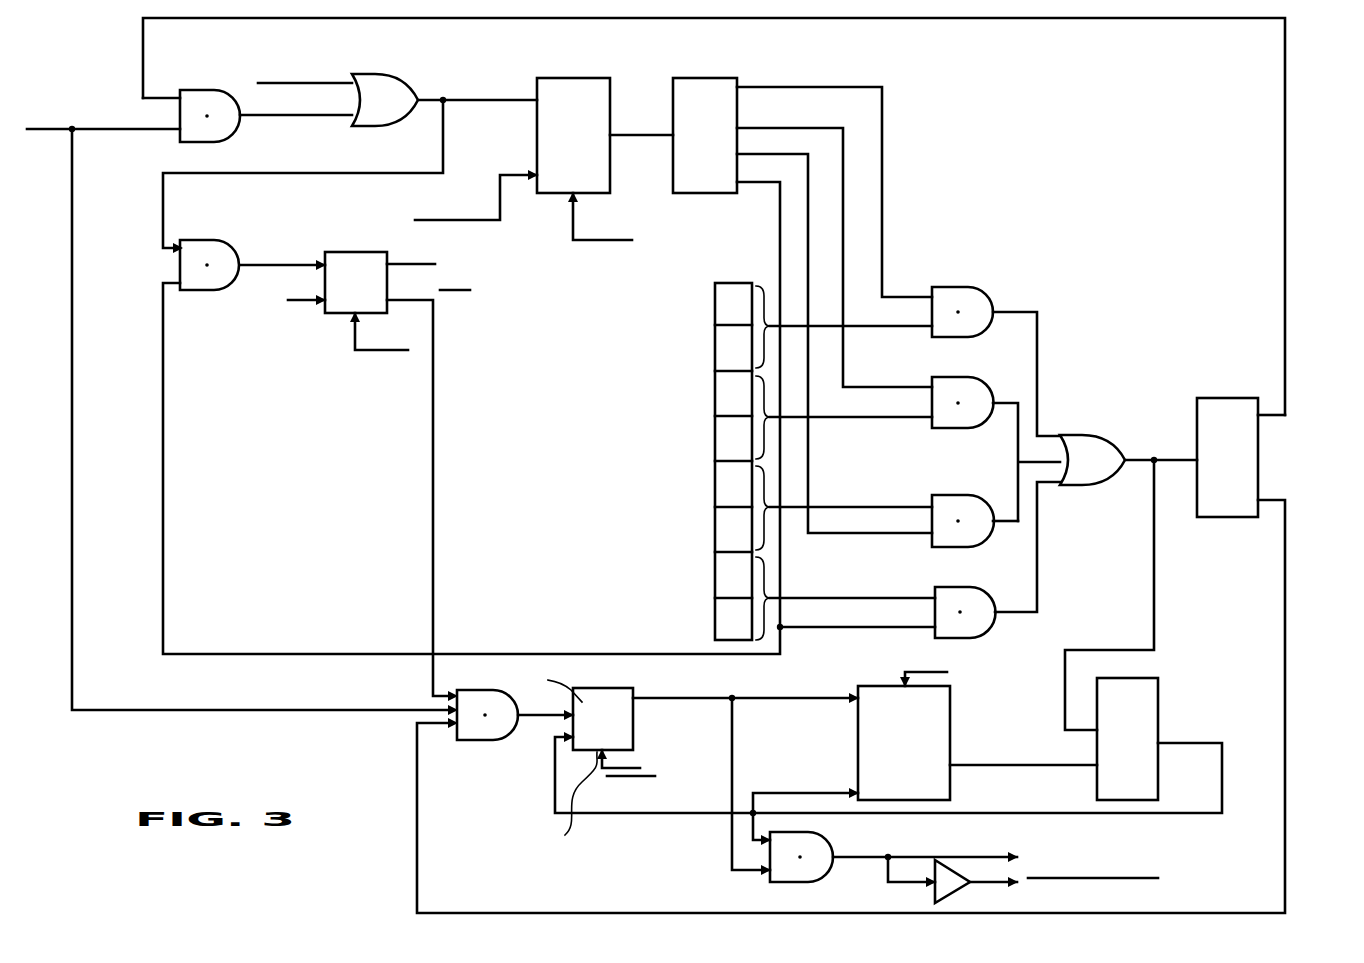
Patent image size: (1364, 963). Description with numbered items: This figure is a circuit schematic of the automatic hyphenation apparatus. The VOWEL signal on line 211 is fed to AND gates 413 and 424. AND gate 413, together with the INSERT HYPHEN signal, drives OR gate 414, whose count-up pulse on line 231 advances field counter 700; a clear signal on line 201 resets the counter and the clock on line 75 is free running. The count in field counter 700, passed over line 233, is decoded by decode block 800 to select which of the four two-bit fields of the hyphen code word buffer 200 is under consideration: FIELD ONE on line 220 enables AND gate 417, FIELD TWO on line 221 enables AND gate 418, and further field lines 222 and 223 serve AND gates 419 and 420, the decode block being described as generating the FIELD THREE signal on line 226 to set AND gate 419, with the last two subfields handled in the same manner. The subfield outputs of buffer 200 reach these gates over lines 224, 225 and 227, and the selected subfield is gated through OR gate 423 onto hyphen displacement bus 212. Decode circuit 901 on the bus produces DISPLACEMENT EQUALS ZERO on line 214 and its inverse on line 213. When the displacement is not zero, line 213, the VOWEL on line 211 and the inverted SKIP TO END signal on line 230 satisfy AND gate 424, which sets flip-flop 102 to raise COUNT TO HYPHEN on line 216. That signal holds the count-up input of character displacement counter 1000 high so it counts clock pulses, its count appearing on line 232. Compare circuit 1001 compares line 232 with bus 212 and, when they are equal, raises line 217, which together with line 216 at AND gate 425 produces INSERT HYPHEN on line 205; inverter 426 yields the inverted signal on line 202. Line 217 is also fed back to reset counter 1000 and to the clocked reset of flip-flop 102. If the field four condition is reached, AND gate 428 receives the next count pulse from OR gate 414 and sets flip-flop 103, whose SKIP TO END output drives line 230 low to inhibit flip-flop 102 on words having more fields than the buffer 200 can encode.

The AND gate 413 is at (203, 88).
The OR gate 414 is at (408, 80).
The vowel signal line 211 is at (45, 136).
The AND gate 428 is at (232, 240).
The skip to end flip-flop 103 is at (335, 252).
The inverted skip to end line 230 is at (433, 350).
The clock pulse line 75 is at (352, 342).
The field counter 700 is at (600, 78).
The count up line 231 is at (500, 103).
The clear line 201 is at (465, 218).
The field counter output line 233 is at (640, 135).
The decode block 800 is at (737, 78).
The field one line 220 is at (882, 172).
The field two line 221 is at (843, 163).
The field 3 line 222 is at (808, 195).
The field 4 line 223 is at (780, 238).
The hyphen code word buffer 200 is at (717, 282).
The bit pair B0-B1 line 224 is at (878, 326).
The bit pair B2-B3 line 225 is at (880, 417).
The field three line 226 is at (908, 536).
The bit pair B6-B7 line 227 is at (870, 596).
The AND gate 417 is at (976, 287).
The AND gate 418 is at (976, 377).
The AND gate 419 is at (976, 495).
The AND gate 420 is at (985, 587).
The OR gate 423 is at (1068, 436).
The hyphen displacement bus 212 is at (1138, 466).
The decode circuit 901 is at (1222, 398).
The displacement equals zero line 214 is at (1285, 152).
The inverted displacement equals zero line 213 is at (1285, 640).
The AND gate 424 is at (480, 740).
The flip-flop 102 is at (622, 688).
The count to hyphen line 216 is at (702, 692).
The hyphen displacement equal character displacement line 217 is at (1222, 807).
The character displacement counter 1000 is at (950, 706).
The counter output line 232 is at (1020, 766).
The compare circuit 1001 is at (1140, 676).
The AND gate 425 is at (826, 836).
The insert hyphen line 205 is at (935, 857).
The inverter 426 is at (934, 890).
The inverted insert hyphen line 202 is at (1010, 888).